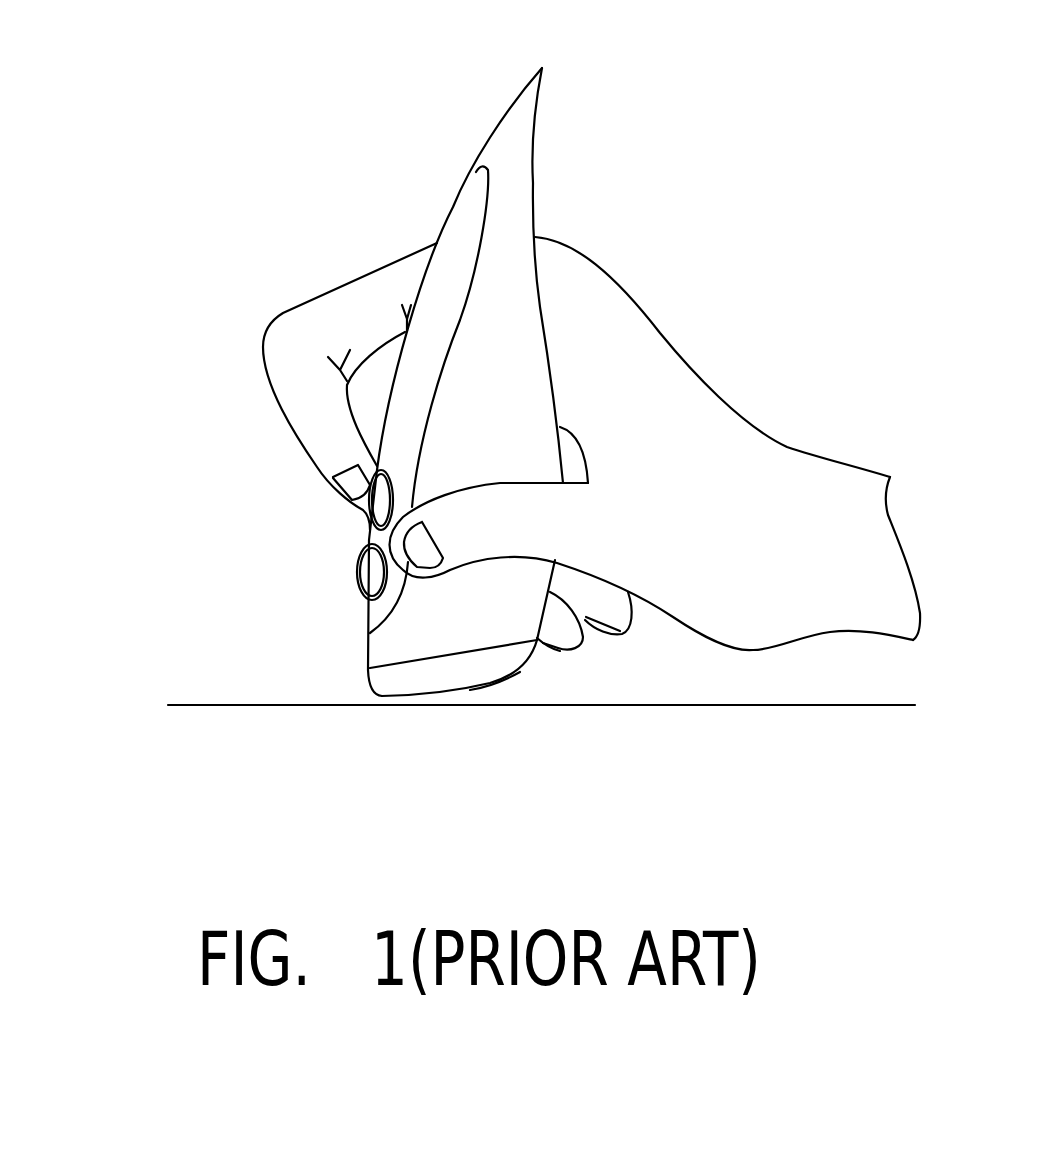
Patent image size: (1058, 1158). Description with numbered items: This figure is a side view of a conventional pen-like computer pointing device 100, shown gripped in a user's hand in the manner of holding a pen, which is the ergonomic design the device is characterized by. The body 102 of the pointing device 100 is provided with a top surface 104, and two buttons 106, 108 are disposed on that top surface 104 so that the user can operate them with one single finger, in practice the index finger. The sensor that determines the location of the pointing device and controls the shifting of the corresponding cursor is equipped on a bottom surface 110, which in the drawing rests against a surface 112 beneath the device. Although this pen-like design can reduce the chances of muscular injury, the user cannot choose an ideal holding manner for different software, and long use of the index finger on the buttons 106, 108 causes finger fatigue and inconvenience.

The pen-like computer pointing device 100 is at (682, 87).
The body 102 is at (507, 302).
The top surface 104 is at (470, 217).
The button 106 is at (367, 509).
The button 108 is at (377, 577).
The bottom surface 110 is at (503, 728).
The touch surface 112 is at (190, 668).